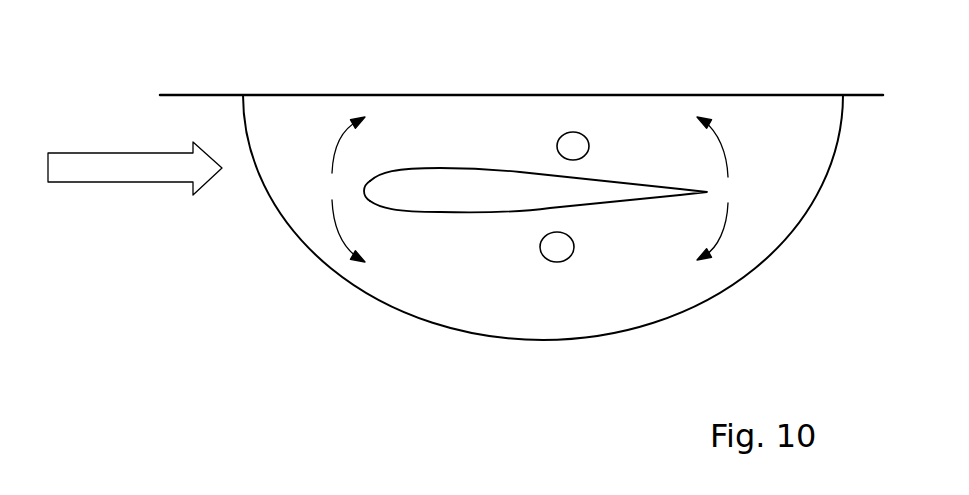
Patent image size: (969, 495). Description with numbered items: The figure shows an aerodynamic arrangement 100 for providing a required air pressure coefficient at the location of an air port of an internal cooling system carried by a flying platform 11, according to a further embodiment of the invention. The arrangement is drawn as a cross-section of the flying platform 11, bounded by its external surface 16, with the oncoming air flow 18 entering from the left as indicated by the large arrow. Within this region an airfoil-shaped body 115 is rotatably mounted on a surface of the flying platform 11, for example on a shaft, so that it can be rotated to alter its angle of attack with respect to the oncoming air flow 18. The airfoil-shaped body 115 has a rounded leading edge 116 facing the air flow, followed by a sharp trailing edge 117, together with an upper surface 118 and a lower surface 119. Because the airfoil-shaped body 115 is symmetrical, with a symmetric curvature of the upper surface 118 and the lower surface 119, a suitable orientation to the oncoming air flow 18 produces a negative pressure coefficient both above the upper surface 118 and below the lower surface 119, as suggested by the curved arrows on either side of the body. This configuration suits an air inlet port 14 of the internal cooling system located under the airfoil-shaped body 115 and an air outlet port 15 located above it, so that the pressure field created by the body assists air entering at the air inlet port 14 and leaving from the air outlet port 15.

The aerodynamic arrangement 100 is at (556, 229).
The flying platform 11 is at (277, 208).
The external surface 16 is at (773, 183).
The oncoming air flow 18 is at (121, 183).
The air inlet port 14 is at (563, 255).
The air outlet port 15 is at (573, 146).
The airfoil-shaped body 115 is at (584, 150).
The rounded leading edge 116 is at (366, 186).
The sharp trailing edge 117 is at (707, 192).
The upper surface 118 is at (442, 167).
The lower surface 119 is at (495, 213).